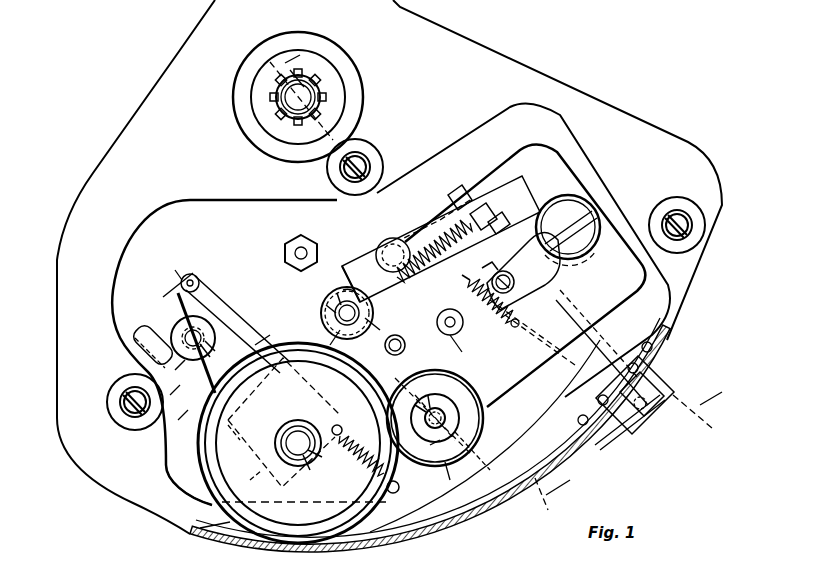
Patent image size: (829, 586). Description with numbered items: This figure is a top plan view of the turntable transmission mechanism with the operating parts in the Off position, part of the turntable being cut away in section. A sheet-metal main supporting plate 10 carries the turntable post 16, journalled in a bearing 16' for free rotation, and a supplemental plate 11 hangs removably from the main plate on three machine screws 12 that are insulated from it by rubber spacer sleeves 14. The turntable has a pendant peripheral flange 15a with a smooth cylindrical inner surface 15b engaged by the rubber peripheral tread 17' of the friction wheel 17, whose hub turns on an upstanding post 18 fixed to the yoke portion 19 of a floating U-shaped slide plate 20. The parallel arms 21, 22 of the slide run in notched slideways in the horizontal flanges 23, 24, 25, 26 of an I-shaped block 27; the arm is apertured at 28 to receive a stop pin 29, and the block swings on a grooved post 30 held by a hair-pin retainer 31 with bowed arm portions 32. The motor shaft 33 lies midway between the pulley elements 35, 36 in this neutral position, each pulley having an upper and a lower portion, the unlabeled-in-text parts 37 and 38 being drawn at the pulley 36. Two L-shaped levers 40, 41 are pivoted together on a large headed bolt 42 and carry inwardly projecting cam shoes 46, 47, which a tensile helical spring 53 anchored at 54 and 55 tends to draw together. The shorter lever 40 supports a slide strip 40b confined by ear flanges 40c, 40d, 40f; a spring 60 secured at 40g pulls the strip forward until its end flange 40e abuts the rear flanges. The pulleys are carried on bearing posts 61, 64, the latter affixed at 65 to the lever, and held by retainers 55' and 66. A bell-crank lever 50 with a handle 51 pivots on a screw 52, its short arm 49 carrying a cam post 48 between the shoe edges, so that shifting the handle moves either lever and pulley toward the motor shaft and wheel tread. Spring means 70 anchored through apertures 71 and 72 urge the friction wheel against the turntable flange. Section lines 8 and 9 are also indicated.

The section line 8- 8 is at (605, 320).
The section line 9- 9 is at (420, 278).
The main supporting plate 10 is at (467, 58).
The supplemental plate 11 is at (177, 213).
The machine screws 12 is at (363, 160).
The rubber spacer sleeves 14 is at (335, 177).
The pendant peripheral flange 15a is at (230, 538).
The cylindrical inner surface 15b is at (207, 537).
The post 16 is at (312, 97).
The bearing 16' is at (311, 47).
The friction wheel 17 is at (182, 485).
The rubber peripheral tread 17' is at (485, 436).
The upstanding post 18 is at (306, 452).
The yoke portion 19 is at (247, 482).
The slide plate 20 is at (178, 425).
The arm 21 is at (177, 399).
The arm 22 is at (223, 343).
The flange 23 is at (153, 350).
The flange 24 is at (245, 305).
The flange 25 is at (232, 447).
The flange 26 is at (295, 380).
The I-shaped block 27 is at (272, 330).
The aperture 28 is at (193, 273).
The stop pin 29 is at (186, 280).
The post 30 is at (184, 330).
The retainer 31 is at (215, 357).
The bowed arm portions 32 is at (199, 330).
The motor shaft 33 is at (380, 347).
The pulley element 35 is at (338, 305).
The pulley element 36 is at (465, 398).
The wheel hub 37 is at (426, 451).
The wheel flange 38 is at (450, 482).
The L-shaped lever 40 is at (523, 170).
The slide strip 40b is at (383, 255).
The ear flange 40c is at (382, 252).
The ear flange 40d is at (531, 287).
The end flange 40e is at (494, 210).
The ear flange 40f is at (315, 251).
The spring anchorage 40g is at (470, 196).
The L-shaped lever 41 is at (617, 297).
The headed bolt 42 is at (585, 222).
The cam shoe 46 is at (379, 327).
The cam shoe 47 is at (446, 334).
The cam post 48 is at (489, 301).
The short arm 49 is at (470, 344).
The bell-crank lever 50 is at (575, 372).
The handle 51 is at (648, 430).
The screw 52 is at (506, 272).
The helical spring 53 is at (492, 260).
The spring end anchorage 54 is at (454, 287).
The spring end anchorage 55 is at (523, 339).
The pin 55' is at (415, 396).
The helical spring 60 is at (436, 228).
The bearing post 61 is at (316, 328).
The bearing post 64 is at (445, 418).
The post attachment 65 is at (479, 460).
The retainer 66 is at (348, 292).
The spring means 70 is at (360, 432).
The aperture 71 is at (337, 424).
The aperture 72 is at (399, 486).
The off position Off is at (682, 438).